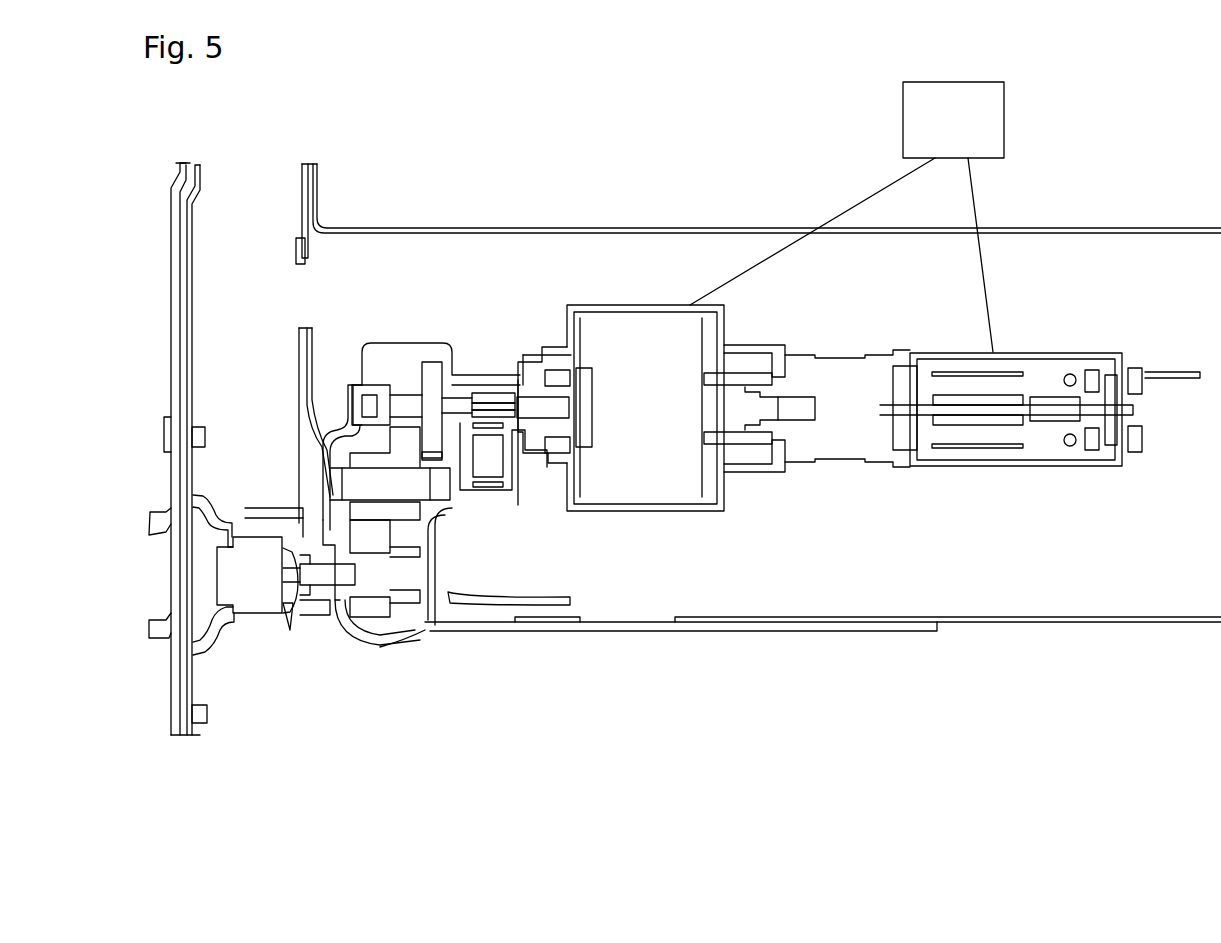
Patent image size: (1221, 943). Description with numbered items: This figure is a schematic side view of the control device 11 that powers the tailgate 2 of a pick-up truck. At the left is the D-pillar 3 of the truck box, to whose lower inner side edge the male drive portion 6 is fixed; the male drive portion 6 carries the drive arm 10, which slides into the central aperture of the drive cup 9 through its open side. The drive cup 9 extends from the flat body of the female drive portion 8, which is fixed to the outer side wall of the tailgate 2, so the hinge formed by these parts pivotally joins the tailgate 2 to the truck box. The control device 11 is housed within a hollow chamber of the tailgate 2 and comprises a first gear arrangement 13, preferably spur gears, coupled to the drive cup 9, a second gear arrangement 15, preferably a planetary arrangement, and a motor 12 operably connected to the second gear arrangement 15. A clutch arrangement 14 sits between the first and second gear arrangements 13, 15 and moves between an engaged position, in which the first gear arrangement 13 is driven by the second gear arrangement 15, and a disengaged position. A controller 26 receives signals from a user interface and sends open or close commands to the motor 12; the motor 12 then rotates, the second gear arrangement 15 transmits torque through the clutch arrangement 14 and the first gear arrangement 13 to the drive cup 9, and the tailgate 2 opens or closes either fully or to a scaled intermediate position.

The tailgate 2 is at (1035, 622).
The D-pillar 3 is at (170, 370).
The male drive portion 6 is at (205, 652).
The female drive portion 8 is at (295, 453).
The drive cup 9 is at (293, 620).
The drive arm 10 is at (262, 617).
The control device 11 is at (656, 288).
The motor 12 is at (1000, 467).
The first gear arrangement 13 is at (410, 340).
The clutch arrangement 14 is at (661, 510).
The second gear arrangement 15 is at (835, 462).
The controller 26 is at (1005, 120).